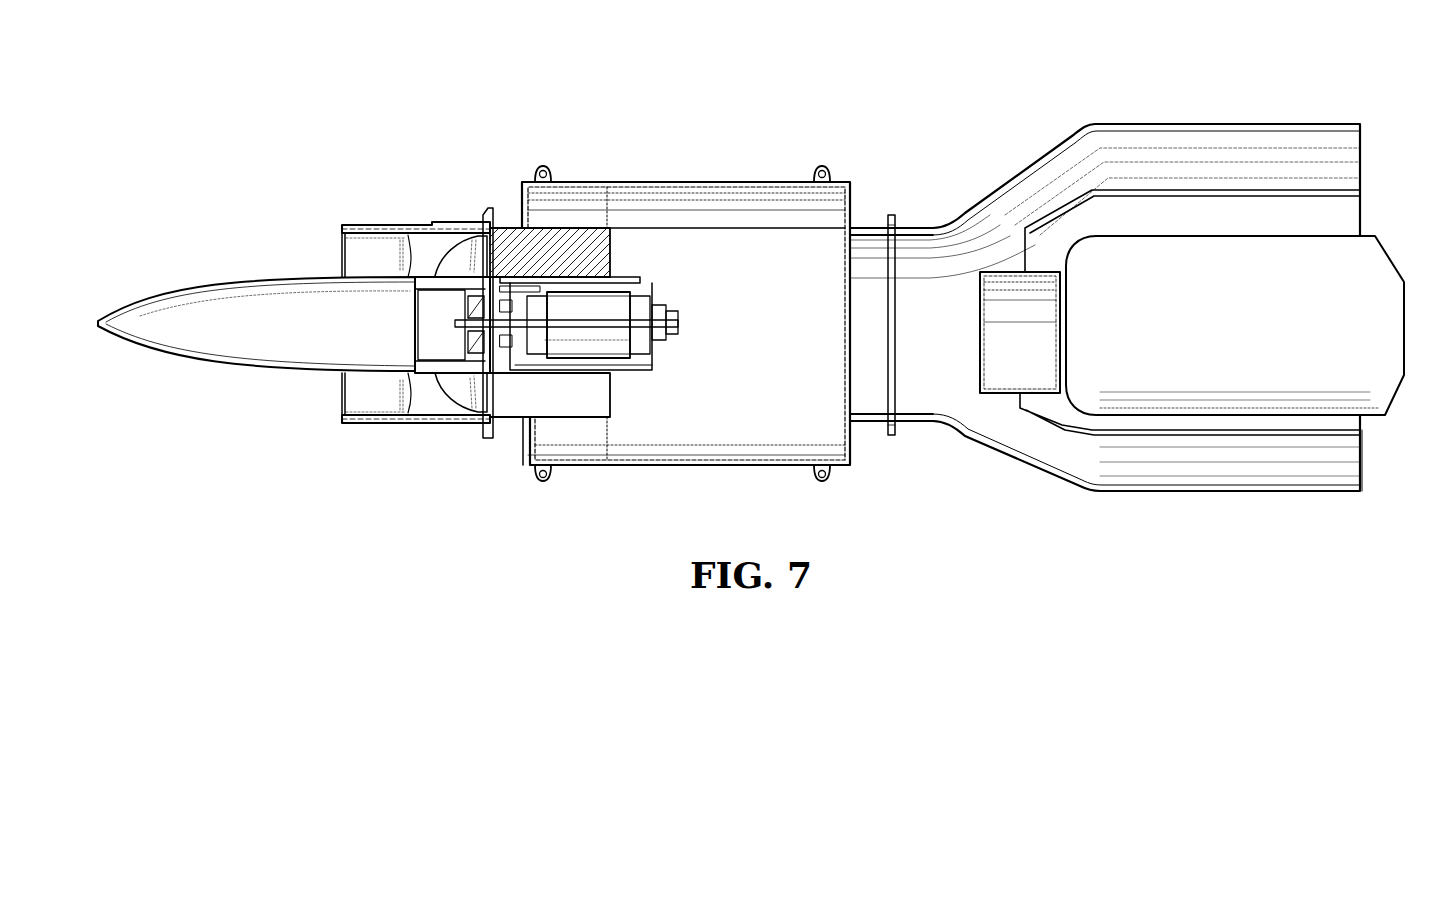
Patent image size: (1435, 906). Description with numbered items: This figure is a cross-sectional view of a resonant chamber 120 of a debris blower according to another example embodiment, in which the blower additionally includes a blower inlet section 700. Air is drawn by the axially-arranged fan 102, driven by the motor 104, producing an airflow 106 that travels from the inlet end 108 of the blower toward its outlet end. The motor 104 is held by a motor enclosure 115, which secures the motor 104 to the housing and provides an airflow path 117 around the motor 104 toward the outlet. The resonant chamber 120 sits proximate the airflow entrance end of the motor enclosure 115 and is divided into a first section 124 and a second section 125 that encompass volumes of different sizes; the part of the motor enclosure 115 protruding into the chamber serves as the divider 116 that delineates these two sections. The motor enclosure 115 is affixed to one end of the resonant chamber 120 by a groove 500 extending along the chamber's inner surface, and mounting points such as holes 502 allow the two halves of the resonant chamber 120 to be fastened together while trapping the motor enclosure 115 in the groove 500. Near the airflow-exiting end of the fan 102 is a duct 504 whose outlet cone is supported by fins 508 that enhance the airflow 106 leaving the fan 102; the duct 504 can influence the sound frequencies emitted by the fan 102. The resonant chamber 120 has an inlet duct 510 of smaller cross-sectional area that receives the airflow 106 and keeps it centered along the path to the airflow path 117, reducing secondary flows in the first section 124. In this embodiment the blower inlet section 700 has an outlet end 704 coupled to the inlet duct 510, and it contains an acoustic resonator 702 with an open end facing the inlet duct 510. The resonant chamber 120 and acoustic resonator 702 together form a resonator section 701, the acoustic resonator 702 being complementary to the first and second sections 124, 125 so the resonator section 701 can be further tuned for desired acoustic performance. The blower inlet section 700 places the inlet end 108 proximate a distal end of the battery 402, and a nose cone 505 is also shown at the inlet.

The fan 102 is at (465, 383).
The motor 104 is at (589, 323).
The airflow 106 is at (242, 247).
The inlet end 108 is at (1368, 460).
The motor enclosure 115 is at (507, 230).
The divider 116 is at (582, 420).
The airflow path 117 is at (550, 395).
The resonant chamber 120 is at (528, 130).
The first section 124 is at (568, 324).
The second section 125 is at (727, 344).
The battery 402 is at (1395, 340).
The groove 500 is at (523, 463).
The holes 502 is at (550, 480).
The duct 504 is at (423, 420).
The nose cone 505 is at (193, 352).
The fins 508 is at (368, 240).
The inlet duct 510 is at (891, 325).
The blower inlet section 700 is at (973, 440).
The resonator section 701 is at (523, 72).
The acoustic resonator 702 is at (1020, 332).
The outlet end 704 is at (942, 275).